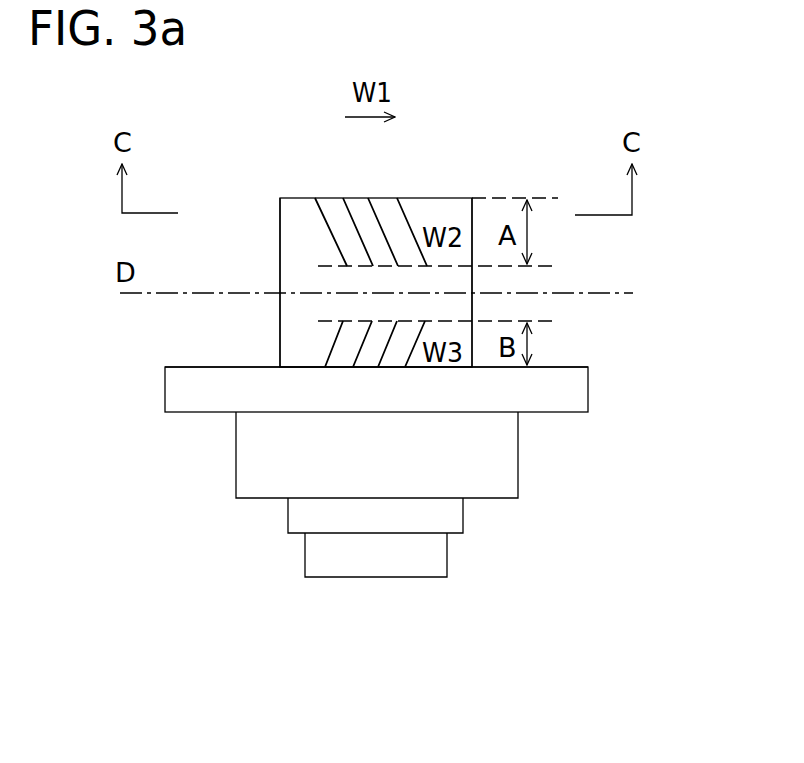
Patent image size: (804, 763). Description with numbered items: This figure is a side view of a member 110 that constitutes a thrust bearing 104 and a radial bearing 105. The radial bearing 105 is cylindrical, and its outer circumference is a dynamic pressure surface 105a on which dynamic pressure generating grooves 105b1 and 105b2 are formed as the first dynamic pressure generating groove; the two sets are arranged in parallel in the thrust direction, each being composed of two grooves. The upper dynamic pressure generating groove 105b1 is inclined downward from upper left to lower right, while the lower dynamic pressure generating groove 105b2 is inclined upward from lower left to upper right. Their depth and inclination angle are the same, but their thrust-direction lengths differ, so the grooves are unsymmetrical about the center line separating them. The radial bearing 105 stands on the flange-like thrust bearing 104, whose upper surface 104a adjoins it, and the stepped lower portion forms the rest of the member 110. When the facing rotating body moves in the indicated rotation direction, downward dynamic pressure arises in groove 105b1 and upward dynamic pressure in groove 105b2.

The thrust bearing 104 is at (582, 385).
The flange upper surface 104a is at (237, 363).
The radial bearing 105 is at (299, 213).
The dynamic pressure surface 105a is at (298, 248).
The dynamic pressure generating groove 105b1 is at (354, 252).
The dynamic pressure generating groove 105b2 is at (411, 326).
The member 110 is at (371, 597).